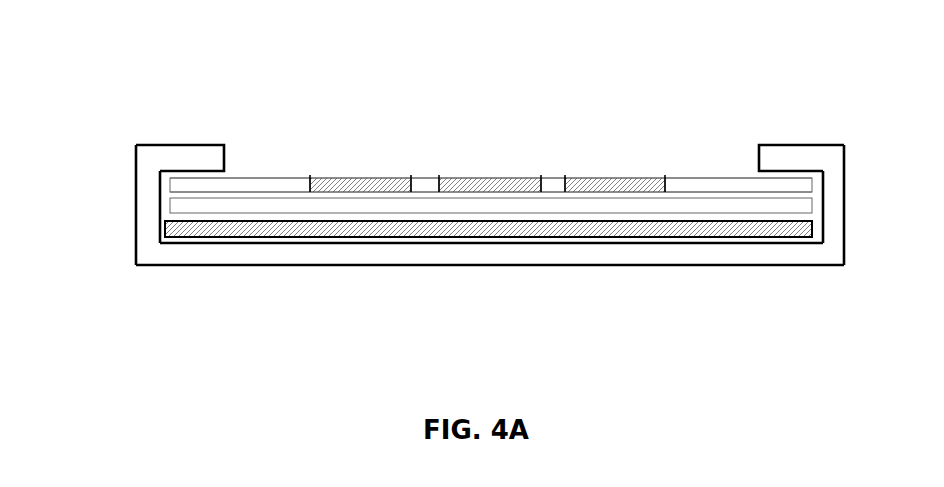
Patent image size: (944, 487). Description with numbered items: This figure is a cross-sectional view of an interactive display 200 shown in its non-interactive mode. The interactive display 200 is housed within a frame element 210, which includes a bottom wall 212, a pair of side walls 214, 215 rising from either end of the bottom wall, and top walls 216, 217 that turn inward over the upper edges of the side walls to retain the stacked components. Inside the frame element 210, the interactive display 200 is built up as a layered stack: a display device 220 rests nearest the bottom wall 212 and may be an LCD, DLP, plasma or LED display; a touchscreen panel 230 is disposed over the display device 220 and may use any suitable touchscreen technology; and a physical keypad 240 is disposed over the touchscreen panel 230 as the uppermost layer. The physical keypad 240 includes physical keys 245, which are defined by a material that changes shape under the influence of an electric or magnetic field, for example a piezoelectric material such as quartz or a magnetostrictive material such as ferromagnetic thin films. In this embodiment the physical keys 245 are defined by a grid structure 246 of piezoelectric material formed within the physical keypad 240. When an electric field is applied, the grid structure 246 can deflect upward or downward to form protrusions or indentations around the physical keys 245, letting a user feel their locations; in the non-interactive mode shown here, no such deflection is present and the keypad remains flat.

The interactive display 200 is at (106, 72).
The frame element 210 is at (466, 206).
The bottom wall 212 is at (345, 248).
The side wall 214 is at (148, 227).
The side wall 215 is at (833, 212).
The top wall 216 is at (173, 155).
The top wall 217 is at (798, 158).
The display device 220 is at (718, 232).
The touchscreen panel 230 is at (610, 203).
The physical keypad 240 is at (731, 180).
The physical keys 245 is at (631, 187).
The grid structure 246 is at (290, 184).